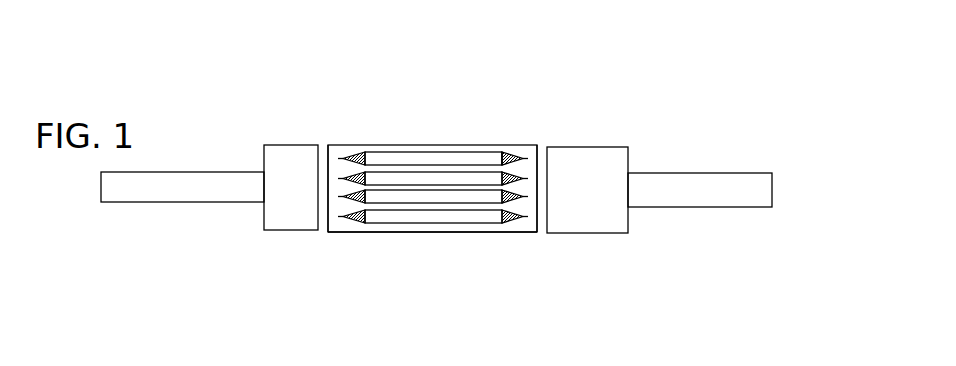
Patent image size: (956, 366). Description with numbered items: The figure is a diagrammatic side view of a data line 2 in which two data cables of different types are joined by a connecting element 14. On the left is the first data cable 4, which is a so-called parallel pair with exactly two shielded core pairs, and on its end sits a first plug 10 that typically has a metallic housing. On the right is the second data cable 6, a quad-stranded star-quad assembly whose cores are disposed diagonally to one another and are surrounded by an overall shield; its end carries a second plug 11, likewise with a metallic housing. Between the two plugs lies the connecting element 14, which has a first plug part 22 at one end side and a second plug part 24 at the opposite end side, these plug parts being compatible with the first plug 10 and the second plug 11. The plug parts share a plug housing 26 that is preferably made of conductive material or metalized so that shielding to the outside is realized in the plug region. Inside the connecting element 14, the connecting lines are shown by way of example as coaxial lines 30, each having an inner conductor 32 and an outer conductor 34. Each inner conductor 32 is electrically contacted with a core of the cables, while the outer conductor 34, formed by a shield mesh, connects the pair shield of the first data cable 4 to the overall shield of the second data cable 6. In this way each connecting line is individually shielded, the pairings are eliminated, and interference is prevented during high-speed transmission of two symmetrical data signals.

The data line 2 is at (732, 87).
The first data cable 4 is at (207, 174).
The second data cable 6 is at (666, 184).
The first plug 10 is at (293, 208).
The second plug 11 is at (598, 212).
The connecting element 14 is at (472, 182).
The first plug part 22 is at (335, 230).
The second plug part 24 is at (527, 225).
The plug housing 26 is at (437, 230).
The coaxial line 30 is at (479, 107).
The inner conductor 32 is at (527, 152).
The outer conductor 34 is at (515, 152).